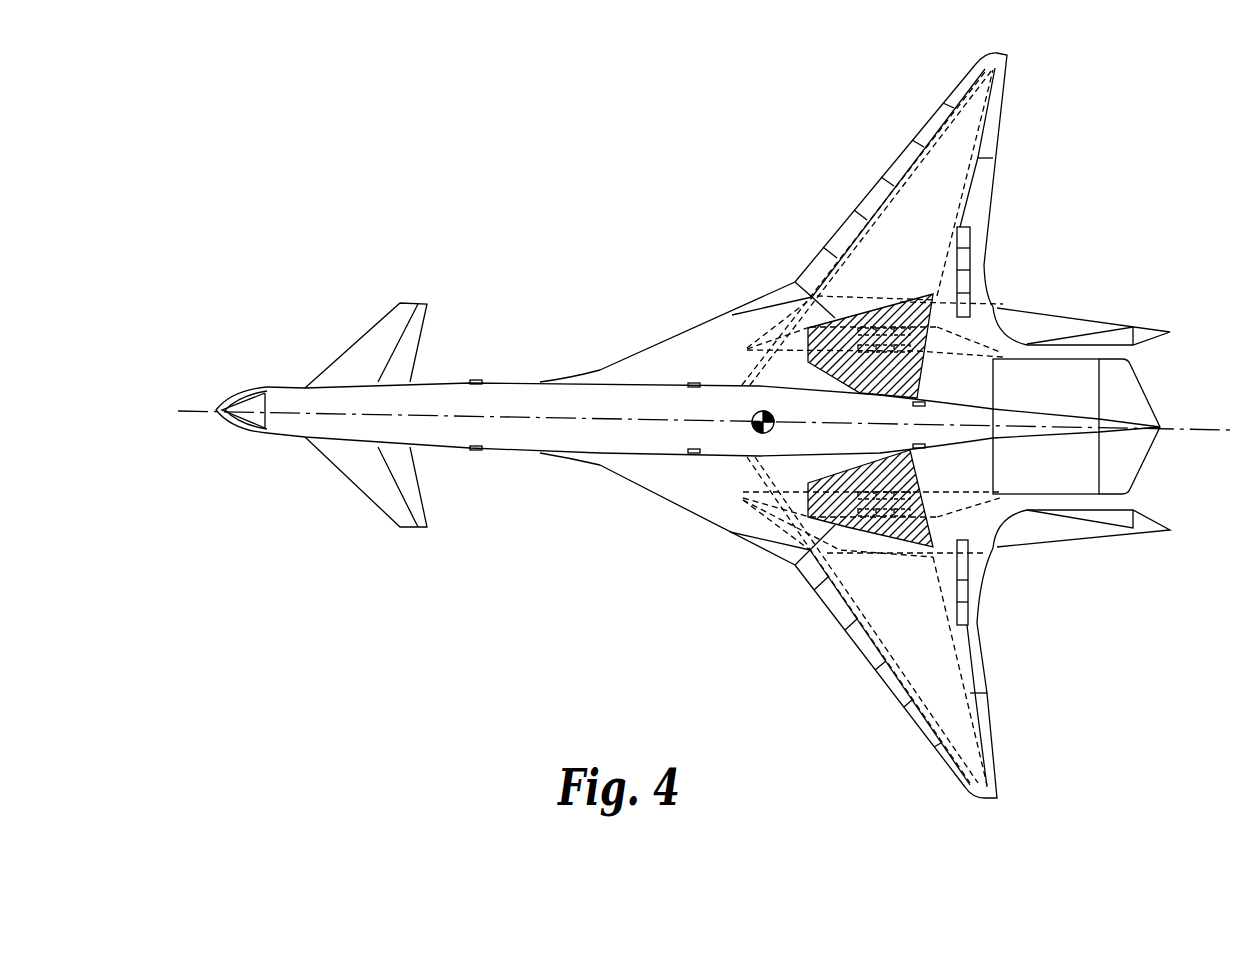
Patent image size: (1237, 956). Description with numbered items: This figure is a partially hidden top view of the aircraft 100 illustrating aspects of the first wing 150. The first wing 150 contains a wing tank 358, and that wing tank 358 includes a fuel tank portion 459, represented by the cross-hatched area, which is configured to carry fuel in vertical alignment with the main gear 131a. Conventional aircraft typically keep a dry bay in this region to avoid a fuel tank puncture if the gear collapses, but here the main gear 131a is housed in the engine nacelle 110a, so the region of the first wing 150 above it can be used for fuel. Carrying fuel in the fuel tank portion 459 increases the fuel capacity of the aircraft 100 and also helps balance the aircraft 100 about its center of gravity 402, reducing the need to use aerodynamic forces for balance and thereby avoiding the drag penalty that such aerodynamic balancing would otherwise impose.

The aircraft 100 is at (519, 200).
The center of gravity 402 is at (752, 419).
The fuel tank portion 459 is at (933, 482).
The main gear 131a is at (800, 563).
The first wing 150 is at (915, 722).
The wing tank 358 is at (853, 567).
The engine nacelle 110a is at (1030, 553).